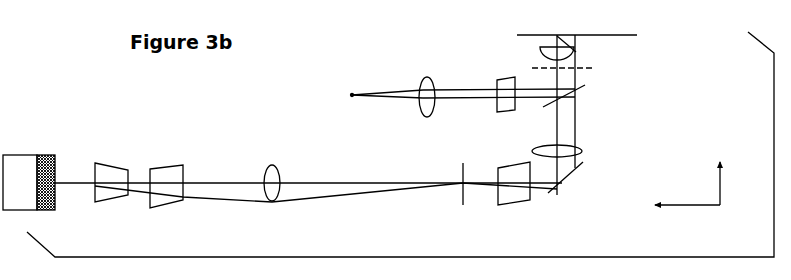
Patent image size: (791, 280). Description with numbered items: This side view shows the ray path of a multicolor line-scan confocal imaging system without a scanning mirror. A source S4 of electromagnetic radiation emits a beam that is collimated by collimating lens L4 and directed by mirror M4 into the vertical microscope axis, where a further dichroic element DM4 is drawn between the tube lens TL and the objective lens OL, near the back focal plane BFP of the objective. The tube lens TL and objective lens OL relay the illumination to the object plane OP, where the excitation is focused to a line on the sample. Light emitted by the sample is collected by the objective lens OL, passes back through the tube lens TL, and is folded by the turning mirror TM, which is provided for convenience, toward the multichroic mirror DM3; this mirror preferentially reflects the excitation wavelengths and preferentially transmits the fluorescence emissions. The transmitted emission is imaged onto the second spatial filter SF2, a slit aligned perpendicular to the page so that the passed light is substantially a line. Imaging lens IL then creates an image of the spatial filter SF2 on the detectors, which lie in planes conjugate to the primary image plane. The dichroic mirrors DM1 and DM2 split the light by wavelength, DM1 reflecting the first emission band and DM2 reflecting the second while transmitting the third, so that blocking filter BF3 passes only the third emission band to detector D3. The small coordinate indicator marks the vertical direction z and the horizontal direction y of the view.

The detector D3 is at (20, 196).
The blocking filter BF3 is at (46, 171).
The dichroic mirror DM2 is at (114, 202).
The dichroic mirror DM1 is at (170, 172).
The imaging lens IL is at (272, 172).
The second spatial filter SF2 is at (459, 174).
The multichroic mirror DM3 is at (514, 200).
The turning mirror TM is at (581, 178).
The tube lens TL is at (573, 151).
The dichroic mirror DM4 is at (587, 100).
The back focal plane BFP is at (585, 69).
The objective lens OL is at (574, 48).
The object plane OP is at (594, 36).
The mirror M4 is at (505, 83).
The collimating lens L4 is at (425, 111).
The source of electromagnetic radiation S4 is at (347, 111).
The z axis z is at (729, 177).
The y axis y is at (685, 215).